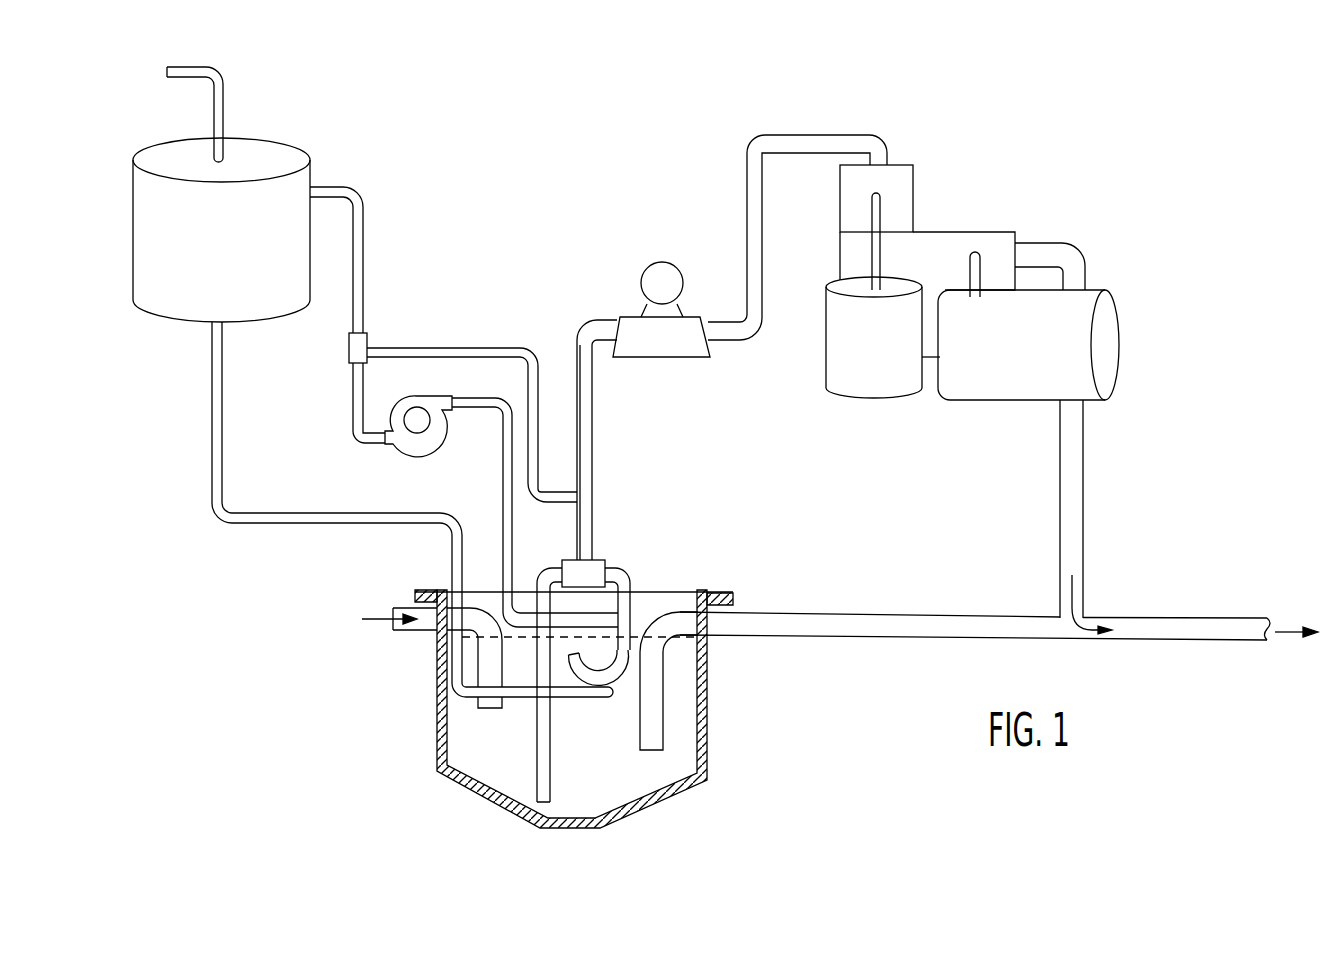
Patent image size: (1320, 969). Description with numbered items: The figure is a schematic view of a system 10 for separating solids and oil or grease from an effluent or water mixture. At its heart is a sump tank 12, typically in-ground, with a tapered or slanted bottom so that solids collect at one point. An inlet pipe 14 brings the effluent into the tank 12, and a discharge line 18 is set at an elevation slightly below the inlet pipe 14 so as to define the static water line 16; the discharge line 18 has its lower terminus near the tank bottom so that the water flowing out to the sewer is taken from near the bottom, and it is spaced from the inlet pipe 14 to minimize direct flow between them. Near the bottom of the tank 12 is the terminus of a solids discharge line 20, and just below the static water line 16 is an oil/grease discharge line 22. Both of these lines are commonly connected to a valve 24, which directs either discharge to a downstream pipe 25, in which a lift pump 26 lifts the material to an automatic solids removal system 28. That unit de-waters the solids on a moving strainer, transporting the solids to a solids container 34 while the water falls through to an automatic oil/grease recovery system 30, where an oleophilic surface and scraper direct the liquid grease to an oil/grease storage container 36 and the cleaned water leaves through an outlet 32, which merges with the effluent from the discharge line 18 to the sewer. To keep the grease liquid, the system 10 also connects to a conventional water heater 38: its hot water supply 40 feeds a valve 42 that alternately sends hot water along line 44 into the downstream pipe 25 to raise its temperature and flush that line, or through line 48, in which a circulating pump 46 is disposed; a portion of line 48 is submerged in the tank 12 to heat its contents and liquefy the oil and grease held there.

The system 10 is at (340, 546).
The sump tank 12 is at (677, 795).
The inlet pipe 14 is at (428, 633).
The static water line 16 is at (680, 640).
The discharge line 18 is at (663, 745).
The solids discharge line 20 is at (537, 800).
The oil/grease discharge line 22 is at (582, 650).
The valve 24 is at (598, 560).
The downstream pipe 25 is at (593, 437).
The lift pump 26 is at (660, 263).
The automatic solids removal system 28 is at (903, 187).
The automatic oil/grease recovery system 30 is at (972, 232).
The outlet 32 is at (1072, 248).
The solids container 34 is at (845, 367).
The oil/grease storage container 36 is at (1107, 345).
The water heater 38 is at (233, 262).
The hot water supply 40 is at (364, 242).
The valve 42 is at (365, 340).
The line 44 is at (481, 347).
The circulating pump 46 is at (424, 396).
The line 48 is at (490, 409).